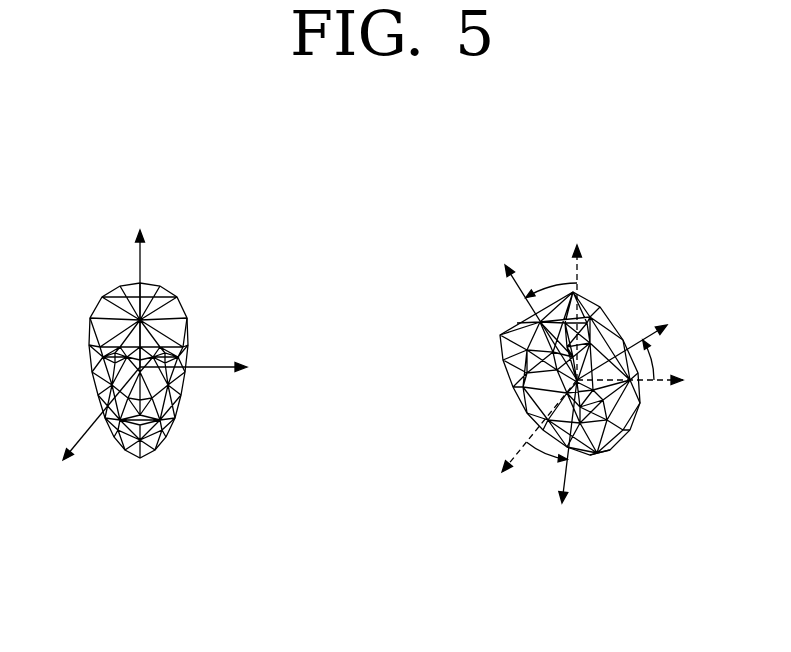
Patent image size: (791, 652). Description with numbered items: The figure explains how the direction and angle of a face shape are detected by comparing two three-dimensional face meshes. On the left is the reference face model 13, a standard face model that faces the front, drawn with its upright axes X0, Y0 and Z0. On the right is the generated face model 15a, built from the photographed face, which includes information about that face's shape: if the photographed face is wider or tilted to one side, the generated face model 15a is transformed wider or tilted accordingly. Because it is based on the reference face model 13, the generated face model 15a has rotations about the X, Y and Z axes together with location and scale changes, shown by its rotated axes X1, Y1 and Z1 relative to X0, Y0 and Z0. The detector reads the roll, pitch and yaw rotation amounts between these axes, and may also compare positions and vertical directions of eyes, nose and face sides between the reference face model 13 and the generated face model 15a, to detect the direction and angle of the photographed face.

The reference 3D face model 13 is at (102, 292).
The generated 3D face model 15a is at (500, 362).
The reference X axis X0 is at (312, 435).
The reference Y axis Y0 is at (413, 391).
The reference Z axis Z0 is at (362, 296).
The rotated X axis X1 is at (552, 457).
The rotated Y axis Y1 is at (635, 345).
The rotated Z axis Z1 is at (533, 307).